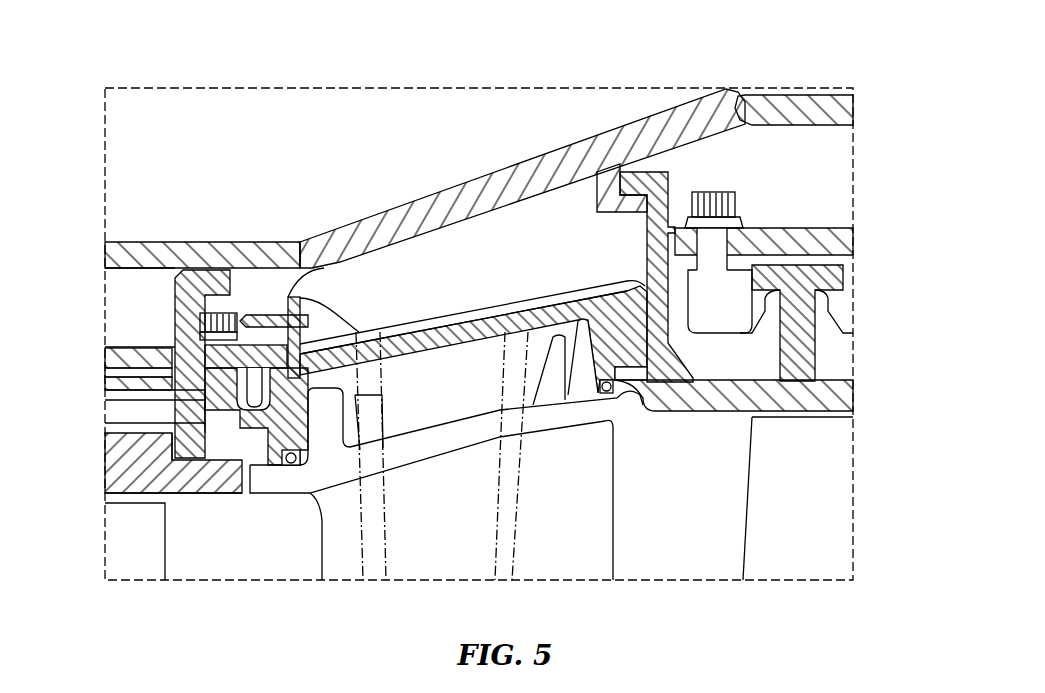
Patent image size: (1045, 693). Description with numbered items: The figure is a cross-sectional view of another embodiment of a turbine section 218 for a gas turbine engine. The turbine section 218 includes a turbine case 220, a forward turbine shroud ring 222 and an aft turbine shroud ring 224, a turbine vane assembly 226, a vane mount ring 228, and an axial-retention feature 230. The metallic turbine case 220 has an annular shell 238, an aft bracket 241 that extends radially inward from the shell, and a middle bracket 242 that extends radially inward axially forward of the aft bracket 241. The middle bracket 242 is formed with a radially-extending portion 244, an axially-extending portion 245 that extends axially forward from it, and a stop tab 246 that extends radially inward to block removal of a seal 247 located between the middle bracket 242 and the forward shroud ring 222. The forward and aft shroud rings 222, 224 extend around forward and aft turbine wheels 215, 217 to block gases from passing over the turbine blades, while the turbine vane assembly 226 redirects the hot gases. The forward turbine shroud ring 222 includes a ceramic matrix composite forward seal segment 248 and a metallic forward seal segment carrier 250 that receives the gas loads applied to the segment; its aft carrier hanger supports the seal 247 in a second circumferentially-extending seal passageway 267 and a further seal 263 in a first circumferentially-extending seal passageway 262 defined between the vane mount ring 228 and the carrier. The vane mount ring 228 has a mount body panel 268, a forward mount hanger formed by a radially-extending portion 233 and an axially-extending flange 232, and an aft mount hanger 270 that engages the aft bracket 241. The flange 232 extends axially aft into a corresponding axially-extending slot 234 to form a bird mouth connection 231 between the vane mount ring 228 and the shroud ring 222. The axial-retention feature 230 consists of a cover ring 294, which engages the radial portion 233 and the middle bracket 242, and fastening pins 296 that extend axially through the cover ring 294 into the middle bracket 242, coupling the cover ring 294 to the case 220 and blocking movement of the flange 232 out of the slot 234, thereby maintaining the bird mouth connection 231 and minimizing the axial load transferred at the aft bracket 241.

The forward turbine wheel 215 is at (142, 532).
The aft turbine wheel 217 is at (822, 559).
The turbine section 218 is at (457, 154).
The turbine case 220 is at (457, 154).
The forward turbine shroud ring 222 is at (137, 260).
The aft turbine shroud ring 224 is at (788, 173).
The turbine vane assembly 226 is at (690, 485).
The vane mount ring 228 is at (512, 290).
The axial-retention feature 230 is at (300, 300).
The bird mouth connection 231 is at (170, 336).
The axially-extending flange 232 is at (282, 307).
The radially-extending portion 233 is at (270, 450).
The axially-extending slot 234 is at (197, 358).
The annular shell 238 is at (534, 157).
The aft bracket 241 is at (610, 150).
The middle bracket 242 is at (296, 255).
The radially-extending portion 244 is at (298, 262).
The axially-extending portion 245 is at (217, 295).
The stop tab 246 is at (322, 317).
The seal 247 is at (200, 318).
The forward seal segment 248 is at (187, 497).
The forward seal segment carrier 250 is at (173, 385).
The first circumferentially-extending seal passageway 262 is at (237, 413).
The seal 263 is at (237, 385).
The second circumferentially-extending seal passageway 267 is at (203, 310).
The mount body panel 268 is at (567, 310).
The aft mount hanger 270 is at (660, 167).
The cover ring 294 is at (313, 333).
The fastening pins 296 is at (259, 340).